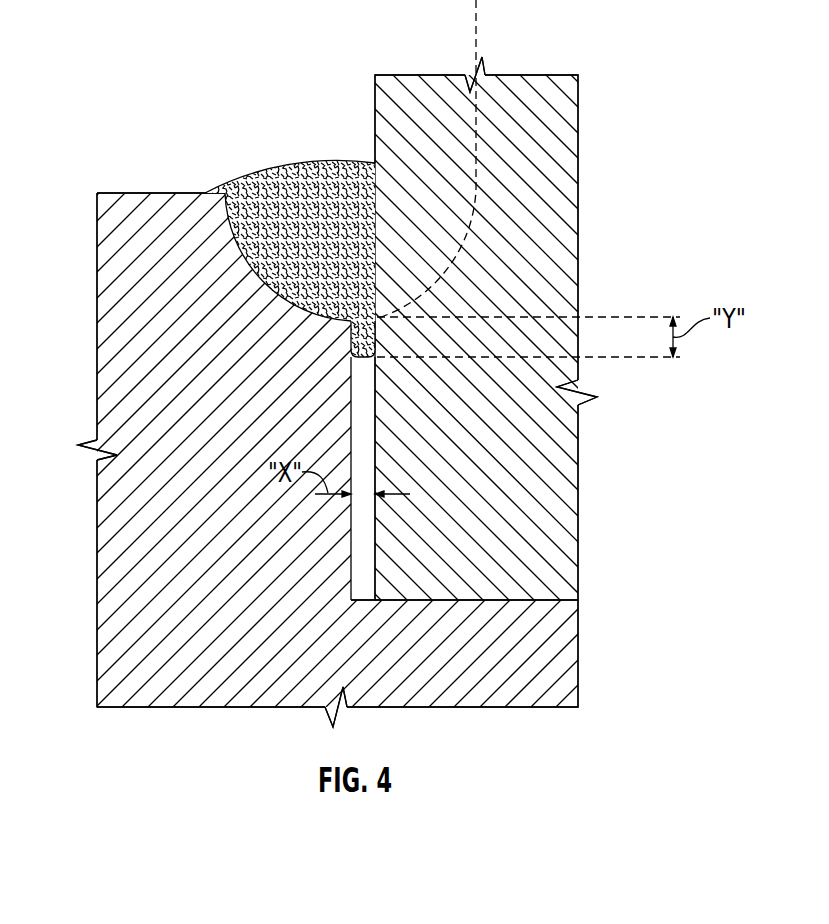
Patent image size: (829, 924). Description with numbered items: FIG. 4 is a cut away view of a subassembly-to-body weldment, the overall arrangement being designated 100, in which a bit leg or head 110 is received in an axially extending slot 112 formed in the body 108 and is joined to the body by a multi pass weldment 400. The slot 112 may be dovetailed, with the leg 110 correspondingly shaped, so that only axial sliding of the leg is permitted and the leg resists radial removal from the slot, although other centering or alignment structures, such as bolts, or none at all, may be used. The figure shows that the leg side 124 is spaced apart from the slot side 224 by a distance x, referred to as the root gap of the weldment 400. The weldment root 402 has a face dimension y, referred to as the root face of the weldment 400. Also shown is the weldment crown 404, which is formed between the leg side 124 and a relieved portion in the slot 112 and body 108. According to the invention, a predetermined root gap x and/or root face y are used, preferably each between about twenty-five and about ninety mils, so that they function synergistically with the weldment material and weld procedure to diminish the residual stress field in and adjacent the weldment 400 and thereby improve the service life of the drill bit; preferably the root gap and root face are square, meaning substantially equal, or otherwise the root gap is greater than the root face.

The welded assembly 100 is at (162, 58).
The body 108 is at (158, 400).
The leg 110 is at (532, 502).
The slot 112 is at (488, 680).
The leg side 124 is at (375, 450).
The slot side 224 is at (351, 440).
The multi pass weldment 400 is at (330, 186).
The weldment root 402 is at (348, 347).
The weldment crown 404 is at (235, 230).